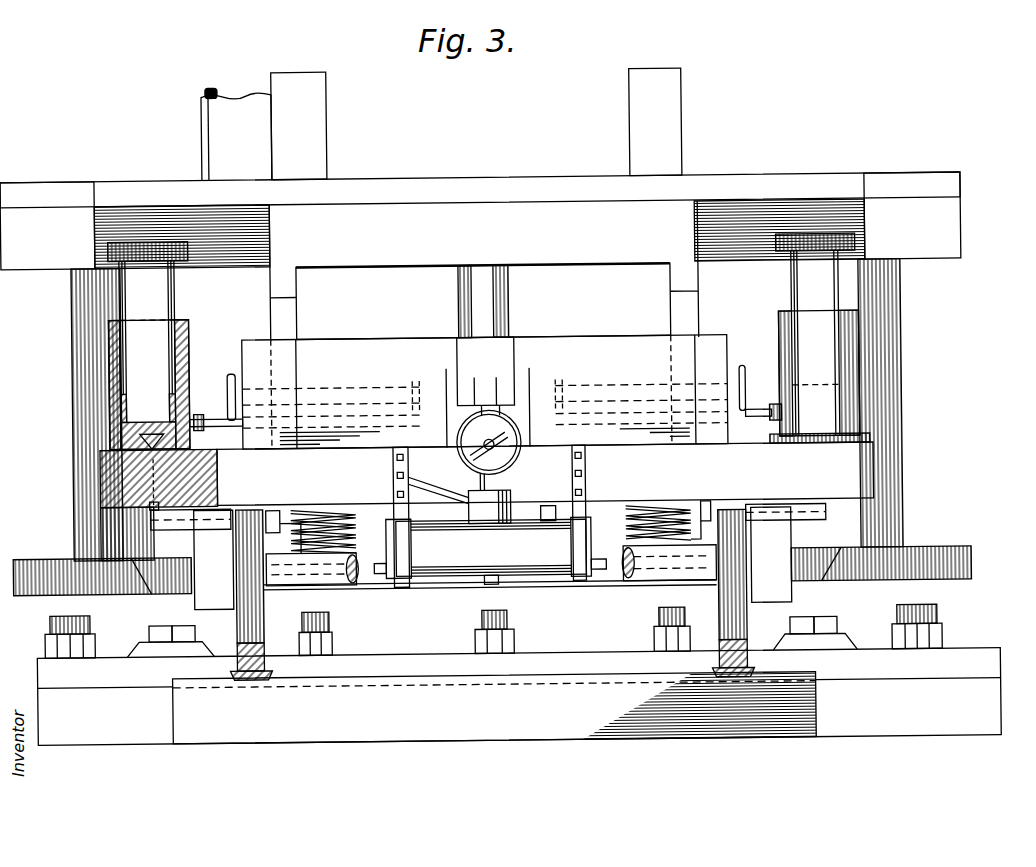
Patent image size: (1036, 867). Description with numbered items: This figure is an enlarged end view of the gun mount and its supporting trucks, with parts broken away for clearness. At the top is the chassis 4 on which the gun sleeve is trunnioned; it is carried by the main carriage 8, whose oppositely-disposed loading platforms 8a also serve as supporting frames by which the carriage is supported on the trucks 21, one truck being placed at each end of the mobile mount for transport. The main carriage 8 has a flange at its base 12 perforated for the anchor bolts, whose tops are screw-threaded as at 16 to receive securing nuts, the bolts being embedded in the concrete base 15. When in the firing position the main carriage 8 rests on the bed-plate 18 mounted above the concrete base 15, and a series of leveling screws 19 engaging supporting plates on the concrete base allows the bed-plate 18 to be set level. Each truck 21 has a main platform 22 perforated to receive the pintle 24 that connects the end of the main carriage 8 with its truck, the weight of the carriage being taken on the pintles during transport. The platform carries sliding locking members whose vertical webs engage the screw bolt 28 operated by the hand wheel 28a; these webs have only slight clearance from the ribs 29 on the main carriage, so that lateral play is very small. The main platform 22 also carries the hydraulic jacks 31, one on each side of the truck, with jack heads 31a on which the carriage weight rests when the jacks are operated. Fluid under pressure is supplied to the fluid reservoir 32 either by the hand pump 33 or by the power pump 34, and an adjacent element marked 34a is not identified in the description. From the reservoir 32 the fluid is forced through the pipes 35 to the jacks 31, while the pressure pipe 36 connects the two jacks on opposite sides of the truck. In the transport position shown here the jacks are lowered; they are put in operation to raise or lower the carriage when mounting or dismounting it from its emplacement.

The chassis 4 is at (323, 92).
The main carriage 8 is at (75, 420).
The loading platforms 8a is at (435, 177).
The base flange 12 is at (941, 549).
The concrete base 15 is at (100, 728).
The screw-threaded tops 16 is at (926, 602).
The bed-plate 18 is at (398, 667).
The leveling screws 19 is at (157, 631).
The trucks 21 is at (202, 579).
The main platform 22 is at (870, 461).
The pintle 24 is at (500, 283).
The screw bolt 28 is at (335, 385).
The hand wheel 28a is at (236, 430).
The ribs 29 is at (272, 275).
The hydraulic jacks 31 is at (110, 354).
The jack heads 31a is at (140, 240).
The fluid reservoir 32 is at (442, 560).
The hand pump 33 is at (393, 486).
The power pump 34 is at (507, 585).
The plunger head 34a is at (507, 348).
The pipes 35 is at (373, 568).
The pressure pipe 36 is at (743, 415).